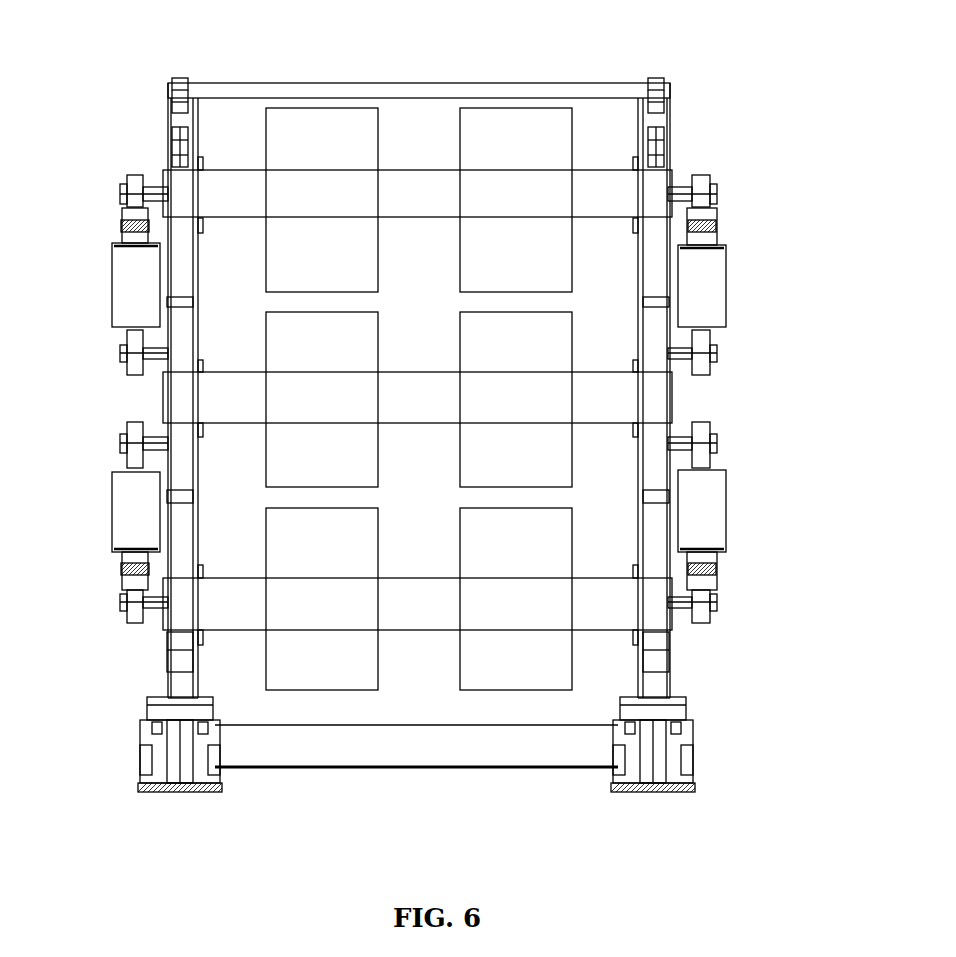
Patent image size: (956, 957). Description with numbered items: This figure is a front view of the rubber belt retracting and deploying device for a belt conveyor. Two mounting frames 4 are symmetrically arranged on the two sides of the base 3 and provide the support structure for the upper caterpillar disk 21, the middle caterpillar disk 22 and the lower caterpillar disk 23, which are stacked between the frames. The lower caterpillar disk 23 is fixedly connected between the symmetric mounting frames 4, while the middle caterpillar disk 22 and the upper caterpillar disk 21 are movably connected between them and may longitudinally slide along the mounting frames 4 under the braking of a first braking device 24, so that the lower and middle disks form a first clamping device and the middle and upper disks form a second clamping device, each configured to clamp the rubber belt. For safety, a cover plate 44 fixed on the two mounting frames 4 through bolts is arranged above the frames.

The base 3 is at (460, 698).
The mounting frame 4 is at (432, 369).
The upper caterpillar disk 21 is at (605, 163).
The middle caterpillar disk 22 is at (621, 393).
The lower caterpillar disk 23 is at (625, 563).
The first braking device 24 is at (478, 383).
The cover plate 44 is at (419, 54).